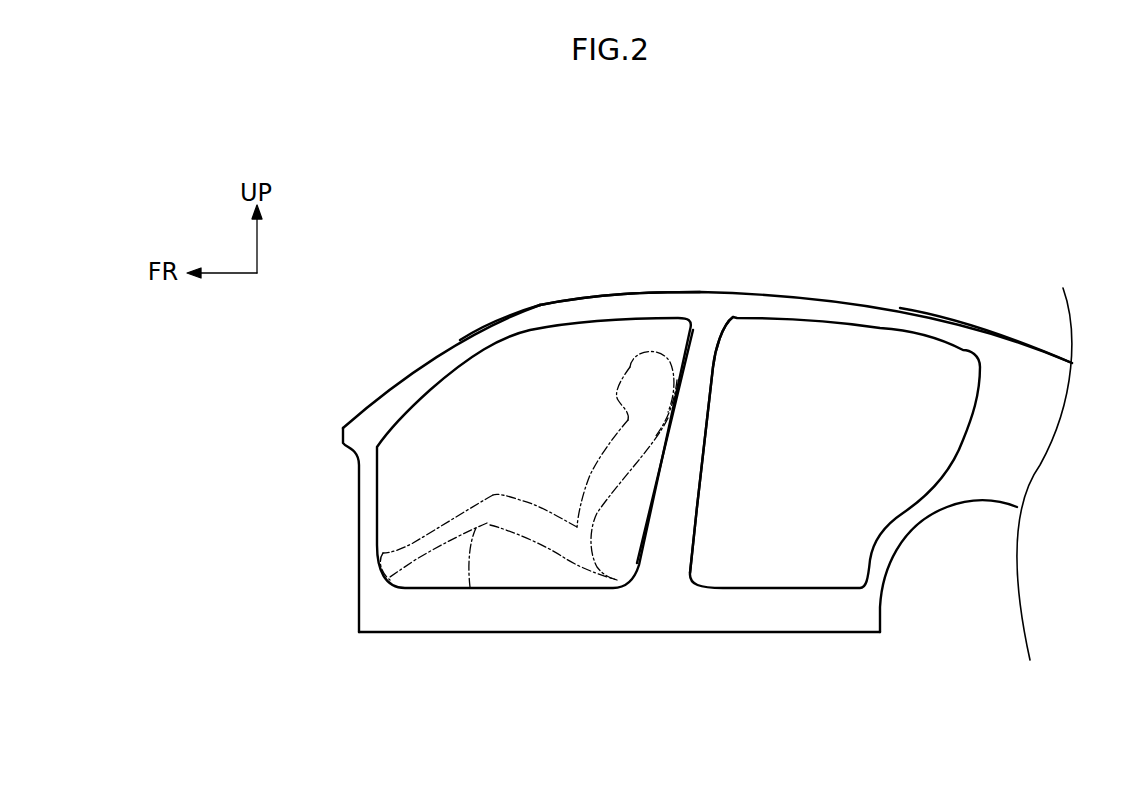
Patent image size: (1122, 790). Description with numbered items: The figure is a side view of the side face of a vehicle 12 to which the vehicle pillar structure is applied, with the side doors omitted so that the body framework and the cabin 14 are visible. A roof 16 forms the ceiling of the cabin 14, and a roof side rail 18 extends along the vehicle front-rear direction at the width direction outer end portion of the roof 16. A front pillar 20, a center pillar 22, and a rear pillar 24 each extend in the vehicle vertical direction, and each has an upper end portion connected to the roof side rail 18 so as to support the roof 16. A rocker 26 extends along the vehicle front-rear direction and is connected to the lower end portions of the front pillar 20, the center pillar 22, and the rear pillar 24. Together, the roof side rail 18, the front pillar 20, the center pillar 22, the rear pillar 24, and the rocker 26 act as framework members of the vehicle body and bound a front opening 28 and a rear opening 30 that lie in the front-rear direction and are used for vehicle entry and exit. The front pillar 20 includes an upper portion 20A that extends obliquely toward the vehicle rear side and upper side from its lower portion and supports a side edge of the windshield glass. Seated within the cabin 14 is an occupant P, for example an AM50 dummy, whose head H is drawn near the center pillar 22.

The vehicle 12 is at (497, 670).
The cabin 14 is at (457, 447).
The roof 16 is at (720, 293).
The roof side rail 18 is at (630, 307).
The front pillar 20 is at (435, 352).
The upper portion 20A is at (493, 317).
The center pillar 22 is at (713, 407).
The rear pillar 24 is at (930, 308).
The rocker 26 is at (635, 613).
The opening 28 is at (374, 495).
The opening 30 is at (752, 590).
The head of occupant H is at (627, 370).
The occupant P is at (588, 462).